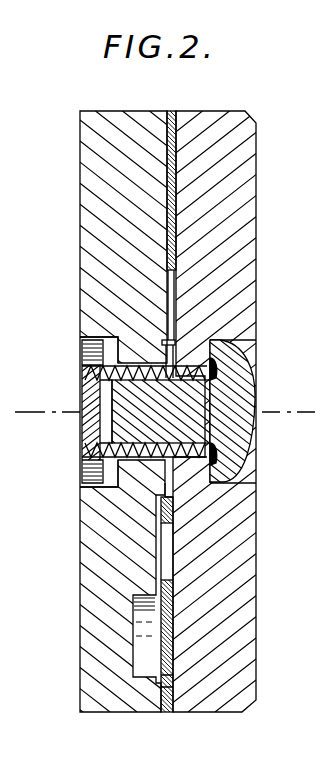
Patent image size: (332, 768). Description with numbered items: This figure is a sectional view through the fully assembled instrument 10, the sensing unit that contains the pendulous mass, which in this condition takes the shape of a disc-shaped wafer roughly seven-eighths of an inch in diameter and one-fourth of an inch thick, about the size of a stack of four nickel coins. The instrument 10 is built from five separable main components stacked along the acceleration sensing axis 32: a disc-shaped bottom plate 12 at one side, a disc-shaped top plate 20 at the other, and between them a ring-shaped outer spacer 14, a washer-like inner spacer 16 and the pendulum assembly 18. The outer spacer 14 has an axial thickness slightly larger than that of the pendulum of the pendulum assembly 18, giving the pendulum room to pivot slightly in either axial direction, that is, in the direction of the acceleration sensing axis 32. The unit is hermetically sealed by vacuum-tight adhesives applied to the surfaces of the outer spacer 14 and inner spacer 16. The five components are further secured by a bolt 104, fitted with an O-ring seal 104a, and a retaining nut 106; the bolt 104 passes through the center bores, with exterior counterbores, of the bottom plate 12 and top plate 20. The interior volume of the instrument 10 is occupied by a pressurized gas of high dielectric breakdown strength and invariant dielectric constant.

The instrument 10 is at (73, 172).
The bottom plate 12 is at (118, 122).
The outer spacer 14 is at (170, 112).
The inner spacer 16 is at (148, 342).
The pendulum assembly 18 is at (172, 230).
The top plate 20 is at (225, 120).
The acceleration sensing axis 32 is at (272, 413).
The bolt 104 is at (232, 393).
The O-ring seal 104a is at (208, 365).
The retaining nut 106 is at (85, 443).